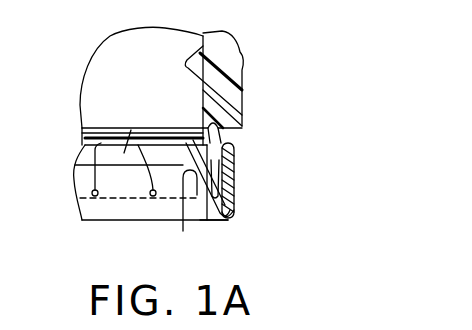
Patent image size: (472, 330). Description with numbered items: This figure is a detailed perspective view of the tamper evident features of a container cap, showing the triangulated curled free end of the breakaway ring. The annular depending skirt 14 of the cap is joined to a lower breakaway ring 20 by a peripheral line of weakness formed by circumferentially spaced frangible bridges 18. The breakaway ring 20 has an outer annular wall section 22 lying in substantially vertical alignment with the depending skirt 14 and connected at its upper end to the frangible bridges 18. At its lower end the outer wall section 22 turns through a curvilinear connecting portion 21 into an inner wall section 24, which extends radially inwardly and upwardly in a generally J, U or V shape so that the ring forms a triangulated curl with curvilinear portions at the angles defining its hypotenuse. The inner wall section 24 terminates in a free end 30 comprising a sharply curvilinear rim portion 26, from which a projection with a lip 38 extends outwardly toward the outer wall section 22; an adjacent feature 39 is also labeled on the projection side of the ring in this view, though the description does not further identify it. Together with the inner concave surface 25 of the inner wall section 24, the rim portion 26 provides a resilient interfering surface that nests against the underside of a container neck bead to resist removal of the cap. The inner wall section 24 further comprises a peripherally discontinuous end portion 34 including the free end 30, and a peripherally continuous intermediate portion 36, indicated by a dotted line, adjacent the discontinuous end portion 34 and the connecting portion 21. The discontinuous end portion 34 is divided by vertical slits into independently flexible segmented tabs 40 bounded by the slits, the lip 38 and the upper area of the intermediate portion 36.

The depending skirt 14 is at (248, 92).
The frangible bridges 18 is at (240, 128).
The breakaway ring 20 is at (256, 193).
The curvilinear connecting portion 21 is at (228, 222).
The outer annular wall section 22 is at (233, 220).
The inner wall section 24 is at (85, 147).
The inner concave surface 25 is at (187, 200).
The curvilinear rim portion 26 is at (161, 128).
The free end 30 is at (190, 128).
The peripherally discontinuous end portion 34 is at (108, 210).
The peripherally continuous intermediate portion 36 is at (157, 212).
The lip 38 is at (234, 199).
The spring hatched portion 39 is at (234, 173).
The segmented tabs 40 is at (131, 128).